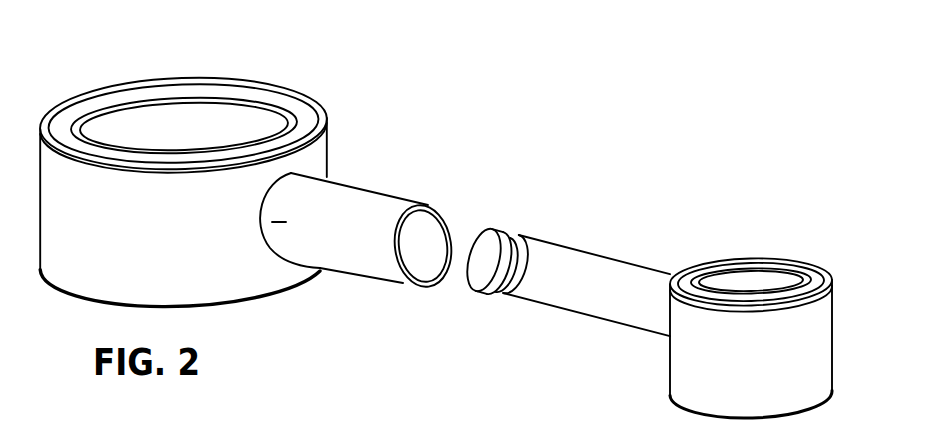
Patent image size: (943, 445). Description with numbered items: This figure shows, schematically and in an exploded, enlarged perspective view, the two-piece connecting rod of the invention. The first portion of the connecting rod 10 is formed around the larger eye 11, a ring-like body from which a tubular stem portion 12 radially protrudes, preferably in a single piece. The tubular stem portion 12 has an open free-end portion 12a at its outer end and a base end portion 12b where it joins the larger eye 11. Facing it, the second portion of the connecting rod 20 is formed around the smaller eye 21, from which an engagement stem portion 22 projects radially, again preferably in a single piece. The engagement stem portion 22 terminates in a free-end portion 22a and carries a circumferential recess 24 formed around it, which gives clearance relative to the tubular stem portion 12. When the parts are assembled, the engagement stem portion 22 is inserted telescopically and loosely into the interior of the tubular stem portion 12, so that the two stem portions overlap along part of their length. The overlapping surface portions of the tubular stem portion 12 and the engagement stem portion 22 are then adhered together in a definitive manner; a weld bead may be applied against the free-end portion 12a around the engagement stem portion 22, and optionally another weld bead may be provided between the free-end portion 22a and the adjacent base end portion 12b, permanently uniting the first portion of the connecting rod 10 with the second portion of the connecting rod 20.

The first portion of the connecting rod 10 is at (352, 147).
The larger eye 11 is at (146, 133).
The tubular stem portion 12 is at (370, 180).
The free-end portion of the tubular stem portion 12a is at (443, 275).
The base end portion of the tubular stem portion 12b is at (274, 222).
The second portion of the connecting rod 20 is at (652, 347).
The smaller eye 21 is at (735, 281).
The engagement stem portion 22 is at (585, 233).
The free-end portion of the engagement stem 22a is at (475, 224).
The circumferential recess 24 is at (497, 300).